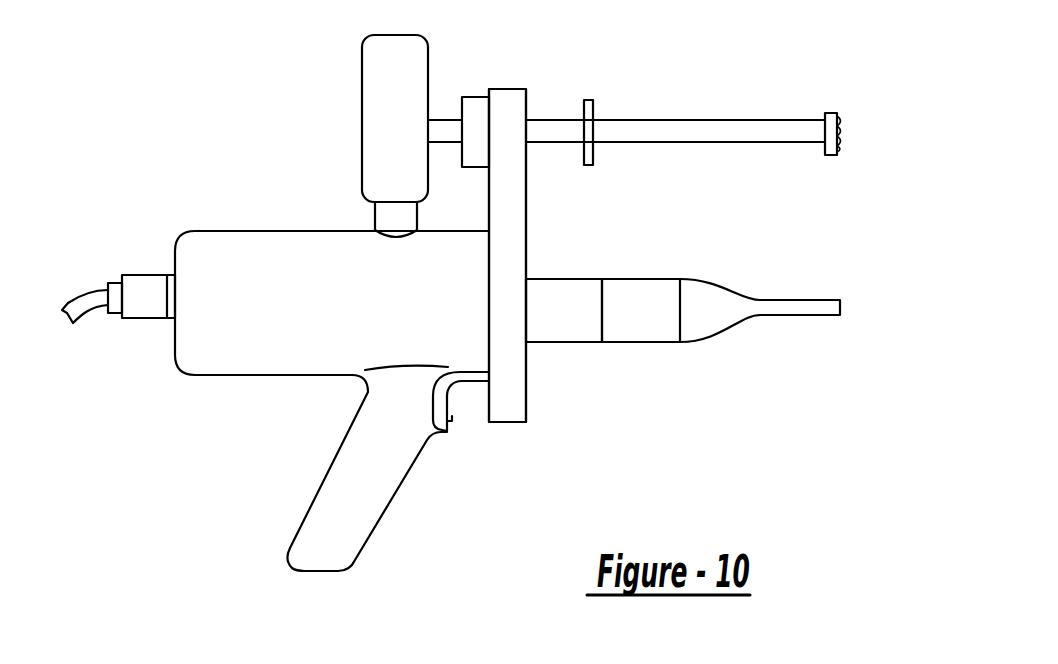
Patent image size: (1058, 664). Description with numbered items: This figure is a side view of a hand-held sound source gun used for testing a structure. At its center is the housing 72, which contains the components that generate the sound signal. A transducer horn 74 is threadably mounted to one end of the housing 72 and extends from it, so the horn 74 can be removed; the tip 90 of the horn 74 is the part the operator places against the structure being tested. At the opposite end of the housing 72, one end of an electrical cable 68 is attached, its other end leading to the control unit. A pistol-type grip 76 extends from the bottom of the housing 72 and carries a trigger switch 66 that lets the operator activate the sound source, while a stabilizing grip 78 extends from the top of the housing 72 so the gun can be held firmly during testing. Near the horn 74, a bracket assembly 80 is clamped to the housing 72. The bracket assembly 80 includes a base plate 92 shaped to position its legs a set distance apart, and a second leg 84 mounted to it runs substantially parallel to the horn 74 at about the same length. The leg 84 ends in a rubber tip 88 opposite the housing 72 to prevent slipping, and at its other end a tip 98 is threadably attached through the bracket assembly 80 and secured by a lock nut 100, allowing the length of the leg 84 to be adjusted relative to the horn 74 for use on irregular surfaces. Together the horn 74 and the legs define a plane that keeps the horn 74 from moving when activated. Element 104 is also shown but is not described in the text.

The trigger switch 66 is at (450, 393).
The electrical cable 68 is at (85, 287).
The housing 72 is at (257, 337).
The transducer horn 74 is at (652, 278).
The pistol-type grip 76 is at (390, 505).
The stabilizing grip 78 is at (362, 88).
The bracket assembly 80 is at (541, 377).
The second leg 84 is at (683, 120).
The rubber tip 88 is at (840, 113).
The tip of the horn 90 is at (840, 300).
The base plate 92 is at (508, 228).
The tip 98 is at (447, 120).
The lock nut 100 is at (475, 97).
The stop bar 104 is at (588, 100).